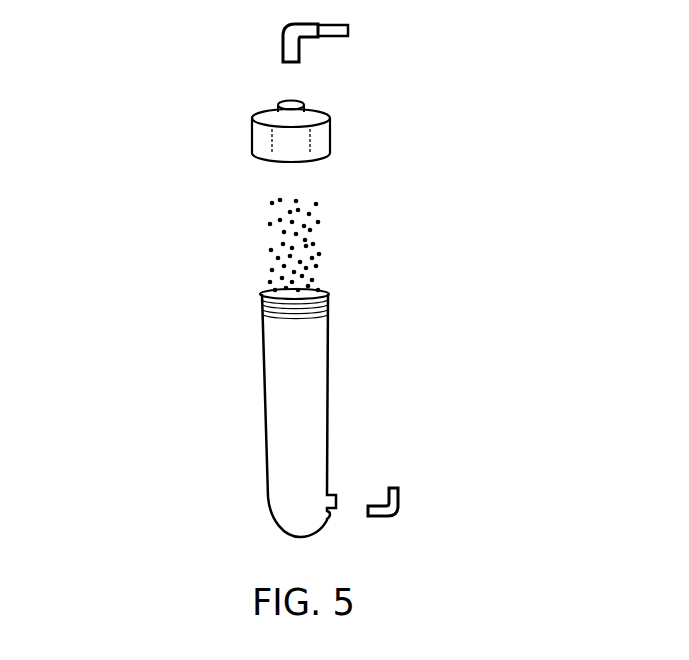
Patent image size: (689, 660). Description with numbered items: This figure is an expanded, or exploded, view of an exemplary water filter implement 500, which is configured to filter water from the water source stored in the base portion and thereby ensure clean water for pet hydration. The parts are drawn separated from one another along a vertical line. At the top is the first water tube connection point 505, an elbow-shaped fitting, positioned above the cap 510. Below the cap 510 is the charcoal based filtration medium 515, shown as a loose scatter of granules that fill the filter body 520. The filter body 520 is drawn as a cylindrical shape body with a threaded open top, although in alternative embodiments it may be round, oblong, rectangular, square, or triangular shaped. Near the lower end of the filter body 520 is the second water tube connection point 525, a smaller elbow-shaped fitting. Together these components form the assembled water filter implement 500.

The water filter implement 500 is at (184, 163).
The first water tube connection point 505 is at (350, 23).
The cap 510 is at (320, 142).
The charcoal based filtration medium 515 is at (318, 240).
The filter body 520 is at (292, 403).
The second water tube connection point 525 is at (398, 488).